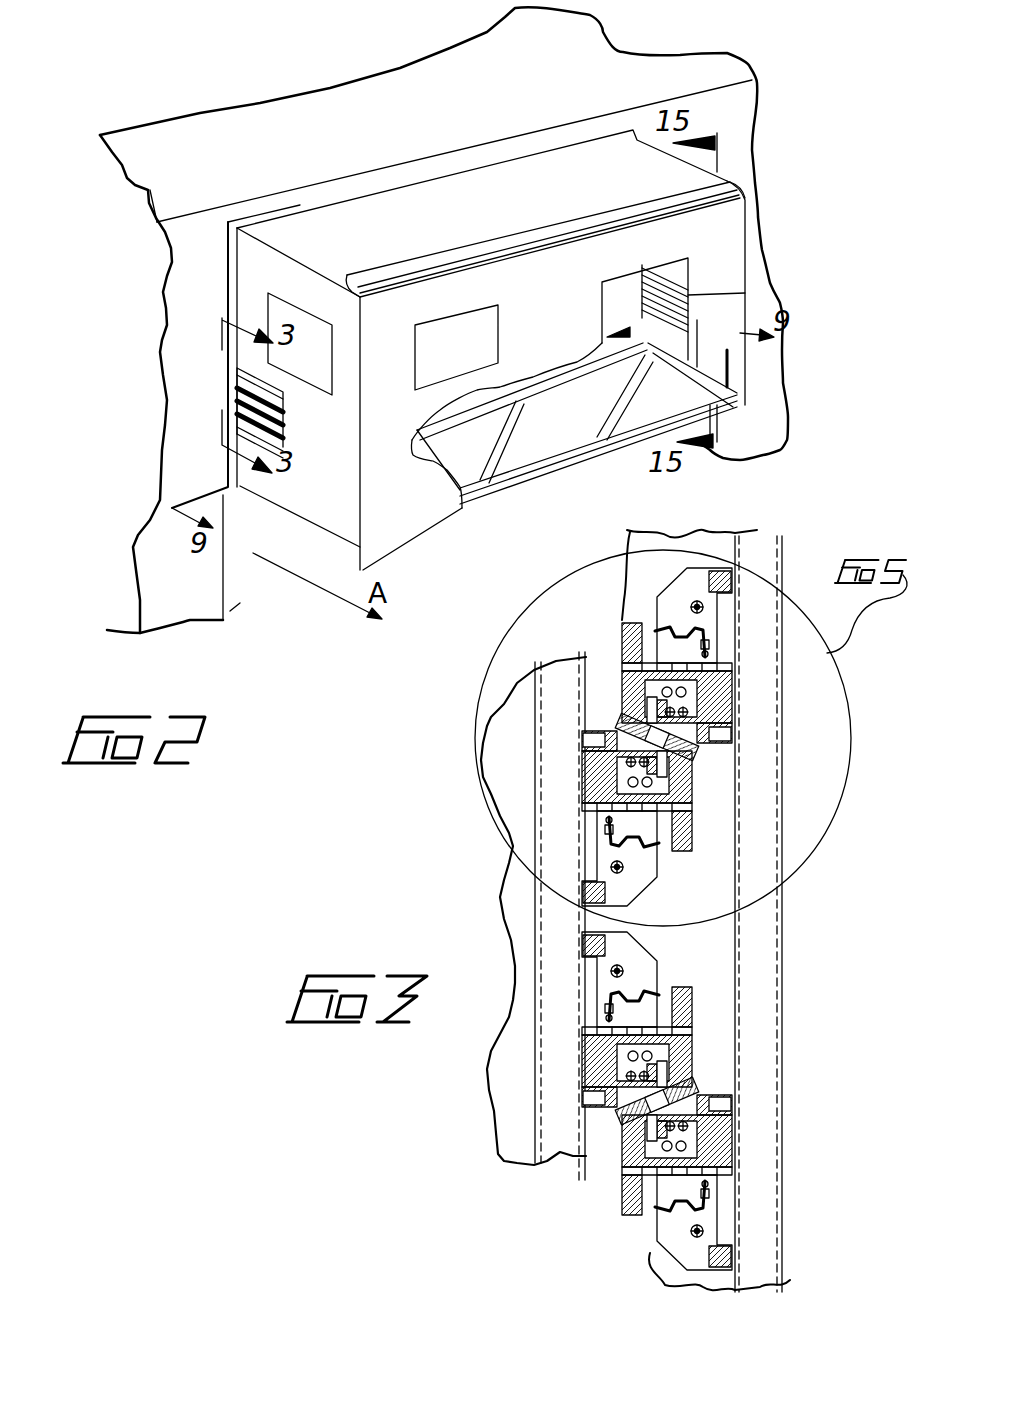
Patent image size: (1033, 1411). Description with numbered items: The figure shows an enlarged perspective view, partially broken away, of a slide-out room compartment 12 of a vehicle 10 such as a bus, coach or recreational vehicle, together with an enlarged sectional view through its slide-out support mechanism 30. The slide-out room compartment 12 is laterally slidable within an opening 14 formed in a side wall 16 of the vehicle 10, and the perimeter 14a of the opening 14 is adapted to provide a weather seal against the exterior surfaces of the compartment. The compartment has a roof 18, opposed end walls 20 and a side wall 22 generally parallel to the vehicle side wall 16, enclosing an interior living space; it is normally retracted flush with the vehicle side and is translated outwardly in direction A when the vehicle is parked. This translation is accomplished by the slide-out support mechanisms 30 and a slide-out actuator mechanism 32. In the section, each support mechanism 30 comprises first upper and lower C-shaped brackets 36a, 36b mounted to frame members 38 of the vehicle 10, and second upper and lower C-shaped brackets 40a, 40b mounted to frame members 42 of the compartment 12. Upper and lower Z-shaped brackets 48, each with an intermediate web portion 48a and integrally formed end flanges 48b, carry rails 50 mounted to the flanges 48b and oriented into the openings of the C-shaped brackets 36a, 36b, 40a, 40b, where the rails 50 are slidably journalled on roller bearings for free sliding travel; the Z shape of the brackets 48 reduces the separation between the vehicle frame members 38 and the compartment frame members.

In FIG. 2, the vehicle 10 is at (616, 68).
In FIG. 3, the vehicle 10 is at (770, 512).
In FIG. 2, the slide-out room compartment 12 is at (703, 222).
In FIG. 3, the slide-out room compartment 12 is at (520, 1120).
In FIG. 2, the opening 14 is at (312, 207).
In FIG. 2, the perimeter of wall opening 14a is at (380, 187).
In FIG. 2, the side wall 16 is at (195, 287).
In FIG. 2, the roof 18 is at (481, 216).
In FIG. 2, the end walls 20 is at (257, 271).
In FIG. 2, the side wall 22 is at (395, 508).
In FIG. 2, the slide-out support mechanism 30 is at (237, 397).
In FIG. 3, the slide-out support mechanism 30 is at (472, 820).
In FIG. 2, the slide-out actuator mechanism 32 is at (525, 450).
In FIG. 3, the first upper 'C' shaped bracket 36a is at (738, 698).
In FIG. 3, the first lower 'C' shaped bracket 36b is at (740, 1135).
In FIG. 3, the frame members 38 is at (753, 953).
In FIG. 3, the second upper 'C' shaped bracket 40a is at (590, 770).
In FIG. 3, the second lower 'C' shaped bracket 40b is at (590, 1063).
In FIG. 3, the frame members 42 is at (565, 866).
In FIG. 3, the 'Z' shaped bracket 48 is at (627, 633).
In FIG. 3, the intermediate web portion 48a is at (687, 1100).
In FIG. 3, the end flanges 48b is at (693, 1005).
In FIG. 3, the rails 50 is at (655, 647).